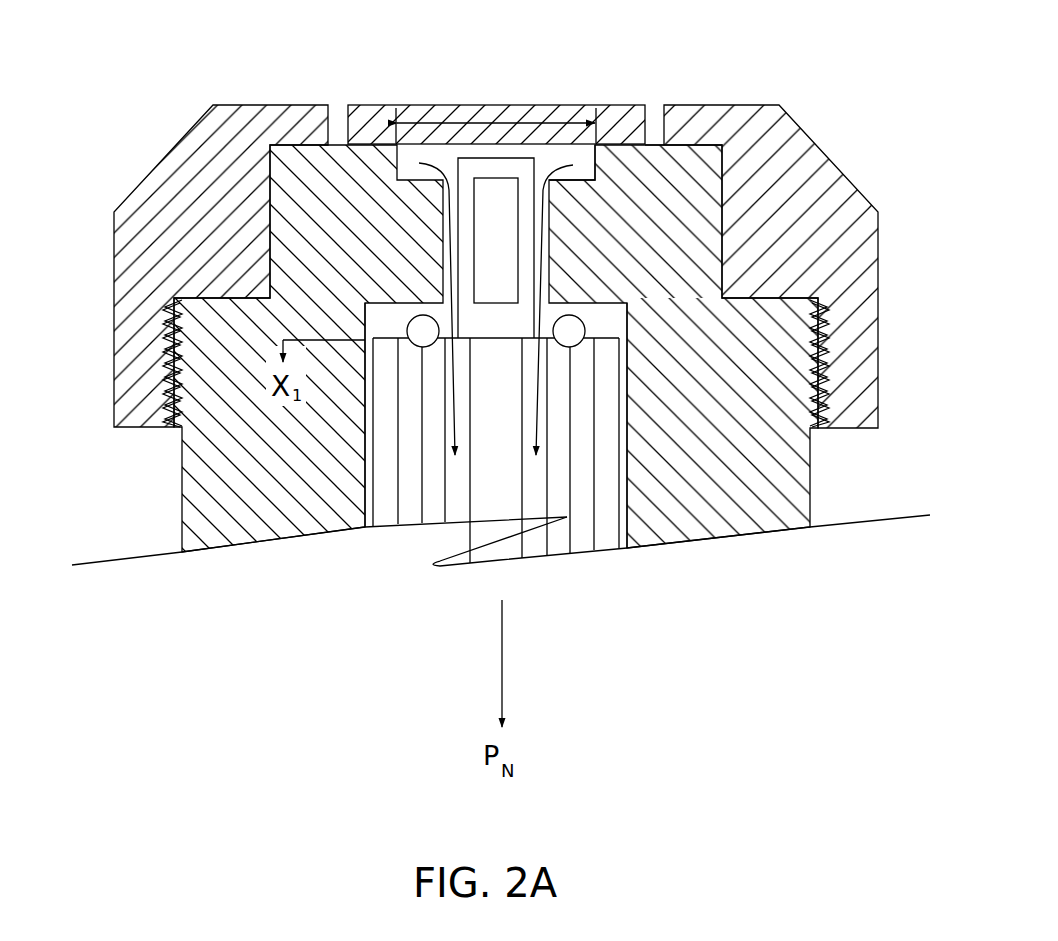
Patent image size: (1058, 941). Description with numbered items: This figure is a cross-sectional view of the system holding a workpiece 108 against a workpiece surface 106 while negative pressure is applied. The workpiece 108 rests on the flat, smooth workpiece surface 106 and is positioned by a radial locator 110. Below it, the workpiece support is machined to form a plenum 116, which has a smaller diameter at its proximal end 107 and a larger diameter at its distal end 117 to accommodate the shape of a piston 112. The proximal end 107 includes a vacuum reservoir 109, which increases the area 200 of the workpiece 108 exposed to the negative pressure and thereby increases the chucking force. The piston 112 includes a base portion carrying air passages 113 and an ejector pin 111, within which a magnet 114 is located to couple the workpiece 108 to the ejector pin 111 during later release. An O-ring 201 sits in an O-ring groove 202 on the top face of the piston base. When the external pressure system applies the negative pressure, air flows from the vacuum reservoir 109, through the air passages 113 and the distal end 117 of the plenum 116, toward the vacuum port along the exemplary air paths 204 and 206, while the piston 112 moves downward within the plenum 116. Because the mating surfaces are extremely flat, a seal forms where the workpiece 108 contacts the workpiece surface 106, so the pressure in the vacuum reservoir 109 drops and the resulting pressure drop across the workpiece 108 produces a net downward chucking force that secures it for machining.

The workpiece surface 106 is at (623, 143).
The proximal end 107 is at (549, 198).
The workpiece 108 is at (381, 105).
The vacuum reservoir 109 is at (580, 152).
The radial locator 110 is at (252, 105).
The ejector pin 111 is at (457, 267).
The piston 112 is at (619, 388).
The air passages 113 is at (594, 417).
The magnet 114 is at (517, 235).
The plenum 116 is at (365, 501).
The distal end 117 is at (628, 497).
The area 200 is at (487, 118).
The O-ring 201 is at (575, 310).
The O-ring groove 202 is at (815, 310).
The air path 204 is at (452, 437).
The air path 206 is at (537, 425).